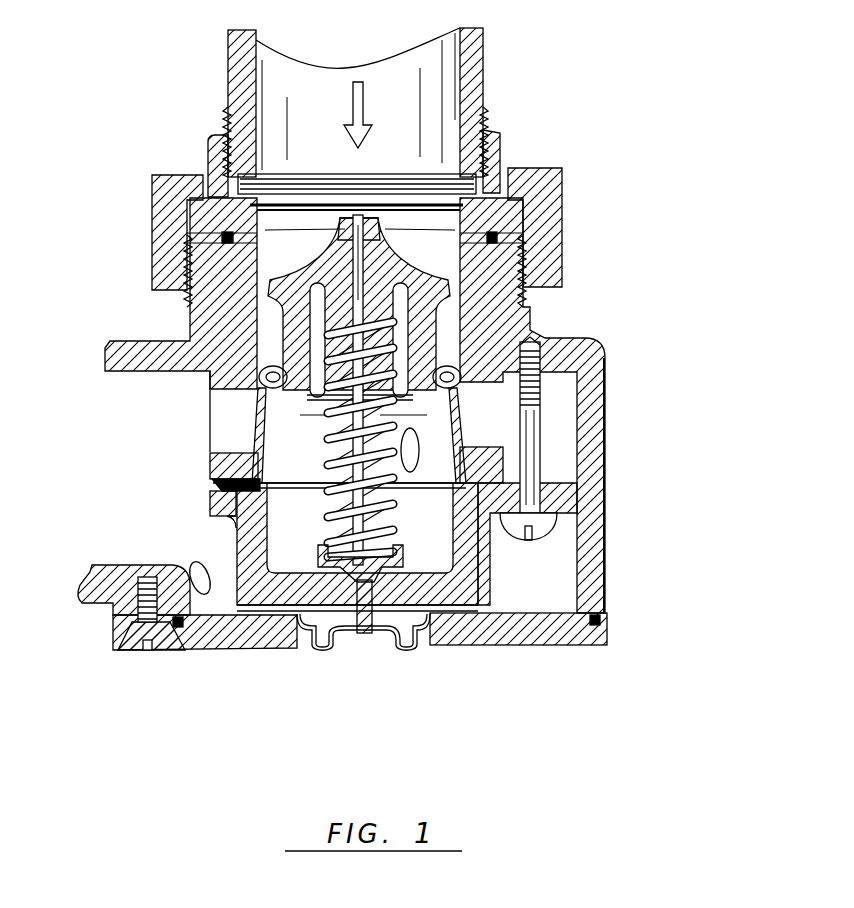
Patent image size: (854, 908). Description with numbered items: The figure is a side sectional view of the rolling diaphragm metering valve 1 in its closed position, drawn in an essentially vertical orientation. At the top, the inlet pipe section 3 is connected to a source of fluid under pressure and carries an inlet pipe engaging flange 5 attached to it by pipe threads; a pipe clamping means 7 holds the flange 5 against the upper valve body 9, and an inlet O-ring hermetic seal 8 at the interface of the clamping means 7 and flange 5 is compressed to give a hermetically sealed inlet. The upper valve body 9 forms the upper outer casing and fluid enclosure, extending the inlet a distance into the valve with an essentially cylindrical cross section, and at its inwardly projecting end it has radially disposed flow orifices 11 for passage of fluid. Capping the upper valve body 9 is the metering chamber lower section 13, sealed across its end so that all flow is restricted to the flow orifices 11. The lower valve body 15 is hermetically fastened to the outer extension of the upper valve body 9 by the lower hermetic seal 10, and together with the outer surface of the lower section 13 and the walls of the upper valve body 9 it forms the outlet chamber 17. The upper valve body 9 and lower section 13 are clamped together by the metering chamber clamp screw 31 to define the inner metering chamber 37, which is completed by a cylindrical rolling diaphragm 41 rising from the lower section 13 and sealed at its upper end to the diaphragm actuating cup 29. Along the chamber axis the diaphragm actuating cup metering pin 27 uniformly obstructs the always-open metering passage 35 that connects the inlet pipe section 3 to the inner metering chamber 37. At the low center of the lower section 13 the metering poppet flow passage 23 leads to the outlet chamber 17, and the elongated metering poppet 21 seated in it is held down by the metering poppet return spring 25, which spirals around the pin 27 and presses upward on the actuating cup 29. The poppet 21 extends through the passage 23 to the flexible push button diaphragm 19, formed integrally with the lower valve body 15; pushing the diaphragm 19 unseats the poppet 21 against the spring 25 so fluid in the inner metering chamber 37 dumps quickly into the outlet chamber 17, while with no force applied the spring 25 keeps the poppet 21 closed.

The rolling diaphragm metering valve 1 is at (662, 305).
The inlet pipe section 3 is at (240, 62).
The inlet pipe engaging flange 5 is at (210, 157).
The pipe clamping means 7 is at (152, 197).
The inlet O-ring hermetic seal 8 is at (222, 237).
The upper valve body 9 is at (212, 340).
The lower hermetic seal 10 is at (192, 650).
The flow orifices 11 is at (232, 427).
The metering chamber lower section 13 is at (212, 497).
The lower valve body 15 is at (252, 650).
The outlet chamber 17 is at (210, 572).
The push button diaphragm 19 is at (323, 652).
The metering poppet 21 is at (362, 640).
The metering poppet flow passage 23 is at (372, 580).
The metering poppet return spring 25 is at (432, 515).
The diaphragm actuating cup metering pin 27 is at (363, 223).
The diaphragm actuating cup 29 is at (423, 287).
The metering chamber clamp screw 31 is at (547, 537).
The metering passage 35 is at (362, 215).
The inner metering chamber 37 is at (463, 473).
The rolling diaphragm 41 is at (460, 383).